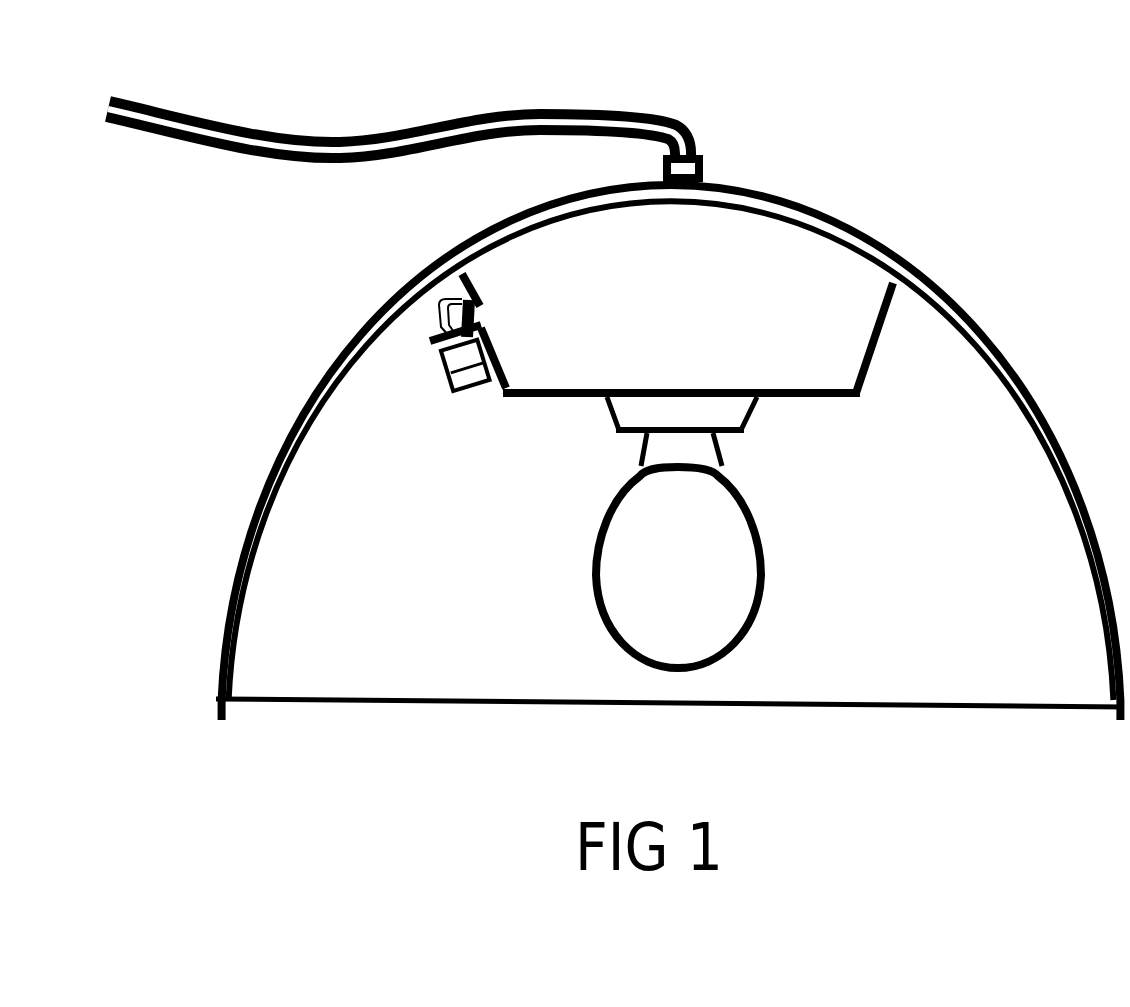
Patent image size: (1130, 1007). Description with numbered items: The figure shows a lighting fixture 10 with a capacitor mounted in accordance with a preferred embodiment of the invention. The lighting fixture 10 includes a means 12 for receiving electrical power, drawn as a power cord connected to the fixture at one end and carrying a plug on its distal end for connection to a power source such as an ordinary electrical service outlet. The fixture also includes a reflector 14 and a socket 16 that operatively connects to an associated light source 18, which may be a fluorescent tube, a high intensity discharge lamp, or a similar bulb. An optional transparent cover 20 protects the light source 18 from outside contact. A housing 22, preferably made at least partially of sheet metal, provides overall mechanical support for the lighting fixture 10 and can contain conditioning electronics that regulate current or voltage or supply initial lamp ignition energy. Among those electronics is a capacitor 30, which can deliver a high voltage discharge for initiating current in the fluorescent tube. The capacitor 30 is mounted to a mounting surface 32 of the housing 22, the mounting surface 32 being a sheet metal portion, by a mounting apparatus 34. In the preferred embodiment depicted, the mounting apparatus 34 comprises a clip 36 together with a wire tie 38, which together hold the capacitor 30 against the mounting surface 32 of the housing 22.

The lighting fixture 10 is at (995, 242).
The means for receiving electrical power 12 is at (213, 145).
The reflector 14 is at (251, 505).
The socket 16 is at (619, 428).
The light source 18 is at (594, 580).
The transparent cover 20 is at (346, 697).
The housing 22 is at (843, 403).
The capacitor 30 is at (473, 397).
The mounting surface 32 is at (507, 368).
The mounting apparatus 34 is at (525, 330).
The clip 36 is at (482, 322).
The wire tie 38 is at (447, 377).